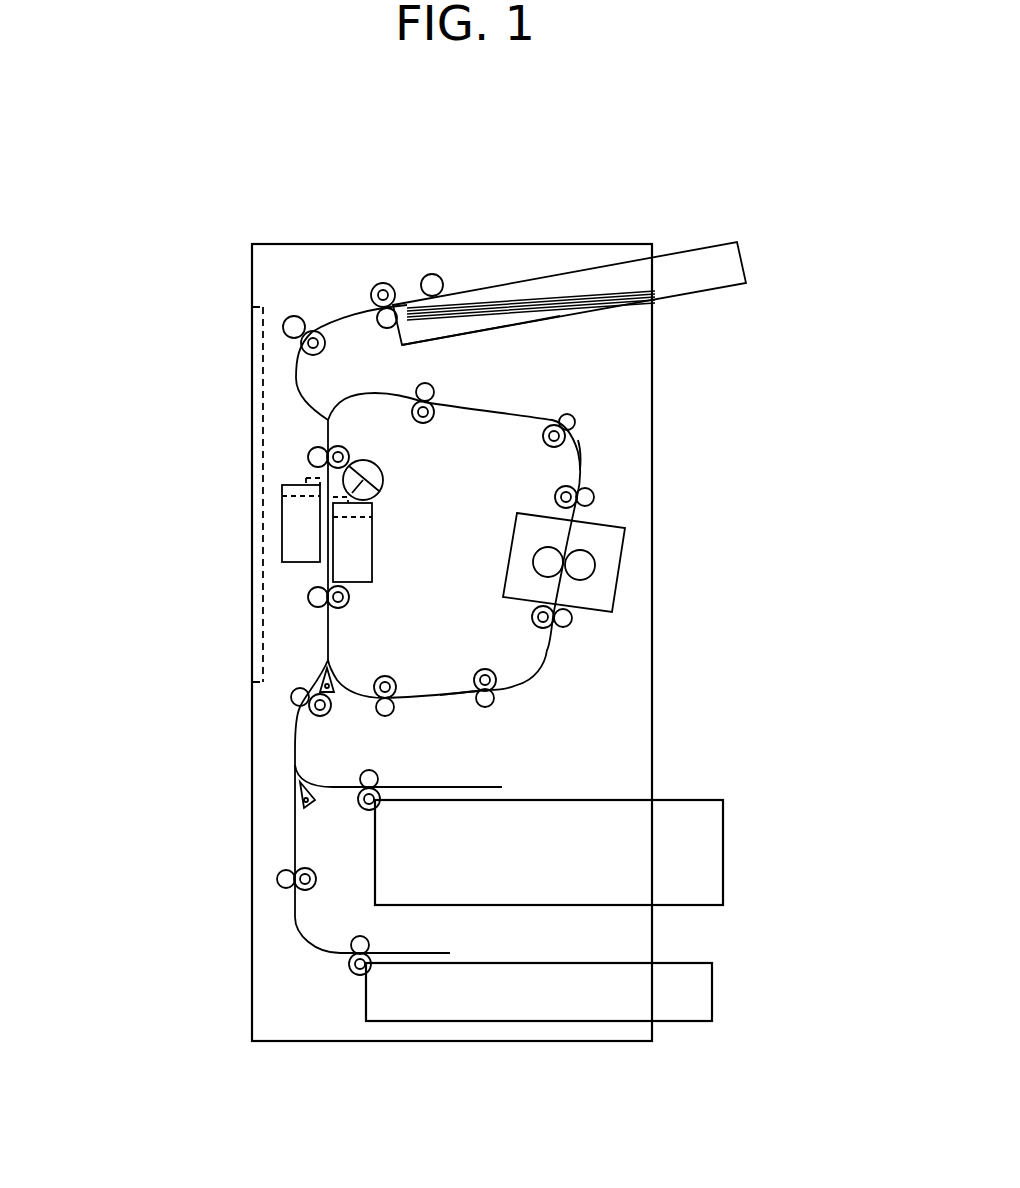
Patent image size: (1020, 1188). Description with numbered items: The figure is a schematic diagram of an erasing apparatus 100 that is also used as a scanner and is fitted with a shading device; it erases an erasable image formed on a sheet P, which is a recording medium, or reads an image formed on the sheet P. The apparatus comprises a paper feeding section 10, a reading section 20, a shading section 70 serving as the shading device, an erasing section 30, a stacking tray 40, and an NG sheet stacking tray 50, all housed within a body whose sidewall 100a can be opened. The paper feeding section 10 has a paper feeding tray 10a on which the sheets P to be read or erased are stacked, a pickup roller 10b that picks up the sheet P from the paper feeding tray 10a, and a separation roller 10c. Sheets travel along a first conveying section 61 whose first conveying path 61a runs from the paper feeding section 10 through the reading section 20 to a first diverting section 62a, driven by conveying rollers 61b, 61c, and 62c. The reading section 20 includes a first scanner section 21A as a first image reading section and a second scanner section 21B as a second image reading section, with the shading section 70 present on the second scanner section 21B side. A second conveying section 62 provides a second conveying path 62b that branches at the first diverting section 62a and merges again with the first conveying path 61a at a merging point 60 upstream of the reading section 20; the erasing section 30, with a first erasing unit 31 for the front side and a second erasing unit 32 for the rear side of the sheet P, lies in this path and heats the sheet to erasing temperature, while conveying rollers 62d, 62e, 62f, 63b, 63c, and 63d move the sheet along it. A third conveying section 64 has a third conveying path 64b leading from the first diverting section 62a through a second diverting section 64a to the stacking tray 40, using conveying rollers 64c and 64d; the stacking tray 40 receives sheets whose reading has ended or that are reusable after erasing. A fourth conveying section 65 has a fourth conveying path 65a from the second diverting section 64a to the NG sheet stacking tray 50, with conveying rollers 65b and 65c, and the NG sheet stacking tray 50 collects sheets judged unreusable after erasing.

The erasing apparatus 100 is at (735, 168).
The sidewall 100a is at (256, 492).
The paper feeding section 10 is at (746, 262).
The paper feeding tray 10a is at (525, 312).
The pickup roller 10b is at (441, 275).
The separation roller 10c is at (391, 283).
The sheet P is at (627, 290).
The first conveying section 61 is at (148, 368).
The first conveying path 61a is at (310, 400).
The conveying roller 61b is at (283, 327).
The conveying roller 61c is at (308, 452).
The merging point 60 is at (330, 430).
The shading section 70 is at (384, 472).
The reading section 20 is at (148, 543).
The first scanner section 21A is at (282, 533).
The second scanner section 21B is at (367, 555).
The second conveying section 62 is at (638, 396).
The first diverting section 62a is at (332, 695).
The second conveying path 62b is at (605, 432).
The conveying roller 62c is at (350, 601).
The conveying roller 62d is at (388, 713).
The conveying roller 62e is at (496, 700).
The conveying roller 62f is at (573, 620).
The conveying roller 63b is at (594, 494).
The conveying roller 63c is at (572, 414).
The conveying roller 63d is at (432, 386).
The erasing section 30 is at (725, 536).
The first erasing unit 31 is at (613, 558).
The second erasing unit 32 is at (553, 530).
The third conveying section 64 is at (265, 770).
The second diverting section 64a is at (312, 808).
The third conveying path 64b is at (293, 742).
The conveying roller 64c is at (292, 695).
The conveying roller 64d is at (379, 779).
The fourth conveying section 65 is at (220, 946).
The fourth conveying path 65a is at (297, 925).
The conveying roller 65b is at (277, 879).
The conveying roller 65c is at (355, 975).
The stacking tray 40 is at (723, 853).
The NG sheet stacking tray 50 is at (712, 998).